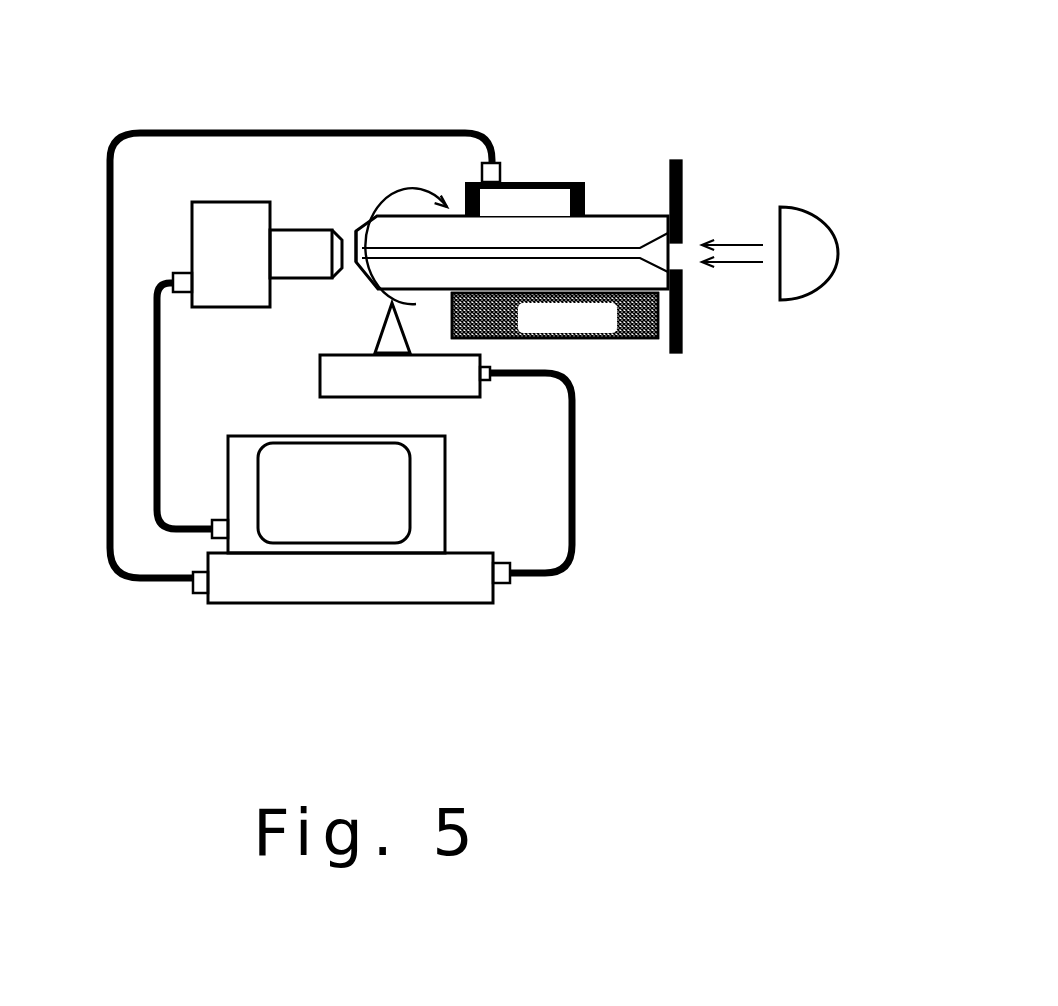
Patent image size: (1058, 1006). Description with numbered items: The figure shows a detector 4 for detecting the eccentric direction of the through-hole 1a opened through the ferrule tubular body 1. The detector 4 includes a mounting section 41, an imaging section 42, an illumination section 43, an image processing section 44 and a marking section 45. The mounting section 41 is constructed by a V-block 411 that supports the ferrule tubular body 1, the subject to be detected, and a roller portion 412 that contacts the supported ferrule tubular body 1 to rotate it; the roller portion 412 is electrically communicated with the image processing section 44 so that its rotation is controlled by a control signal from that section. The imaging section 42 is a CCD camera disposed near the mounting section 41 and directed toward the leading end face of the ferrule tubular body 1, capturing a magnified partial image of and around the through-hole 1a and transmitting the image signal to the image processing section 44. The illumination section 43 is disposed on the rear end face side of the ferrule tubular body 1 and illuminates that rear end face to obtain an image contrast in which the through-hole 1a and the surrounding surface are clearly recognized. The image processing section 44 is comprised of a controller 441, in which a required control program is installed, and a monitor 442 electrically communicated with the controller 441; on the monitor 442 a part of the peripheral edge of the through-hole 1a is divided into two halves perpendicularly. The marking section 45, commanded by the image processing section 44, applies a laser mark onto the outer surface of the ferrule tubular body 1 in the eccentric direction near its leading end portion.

The ferrule tubular body 1 is at (632, 216).
The through-hole 1a is at (354, 240).
The detector 4 is at (620, 137).
The mounting section 41 is at (650, 340).
The V-block 411 is at (590, 338).
The roller portion 412 is at (530, 198).
The imaging section 42 is at (310, 228).
The illumination section 43 is at (812, 212).
The image processing section 44 is at (228, 605).
The controller 441 is at (438, 593).
The monitor 442 is at (325, 528).
The marking section 45 is at (468, 390).